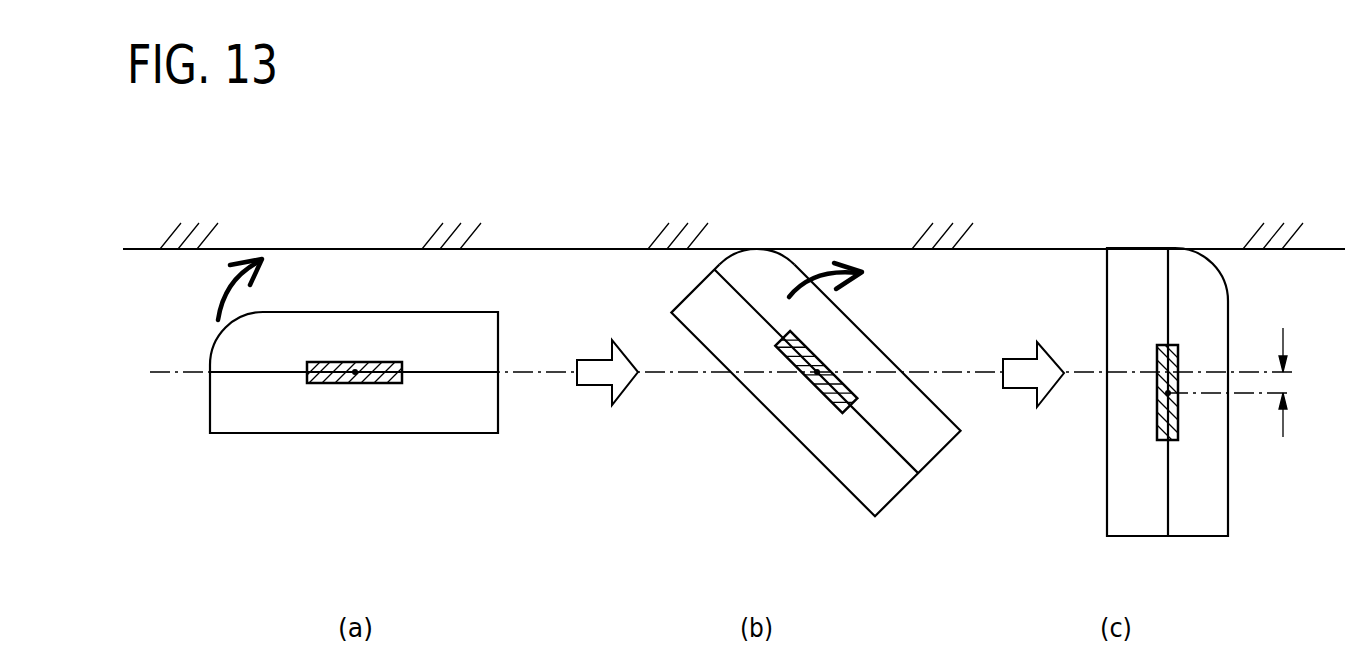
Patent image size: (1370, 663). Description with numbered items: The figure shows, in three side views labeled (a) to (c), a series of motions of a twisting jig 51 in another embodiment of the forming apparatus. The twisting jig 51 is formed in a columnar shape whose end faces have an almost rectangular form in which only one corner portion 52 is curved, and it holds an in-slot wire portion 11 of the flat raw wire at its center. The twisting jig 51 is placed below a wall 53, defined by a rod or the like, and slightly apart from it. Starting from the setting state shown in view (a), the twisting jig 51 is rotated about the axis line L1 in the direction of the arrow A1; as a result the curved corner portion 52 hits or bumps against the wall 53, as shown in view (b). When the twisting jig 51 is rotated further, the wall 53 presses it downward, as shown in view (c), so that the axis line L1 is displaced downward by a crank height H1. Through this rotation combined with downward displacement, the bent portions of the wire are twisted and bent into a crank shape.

The in-slot wire portion 11 is at (316, 384).
The twisting jig 51 is at (210, 398).
The corner portion 52 is at (232, 318).
The wall 53 is at (558, 251).
The arrow A1 is at (227, 292).
The axis line L1 is at (355, 377).
The crank height H1 is at (1253, 382).